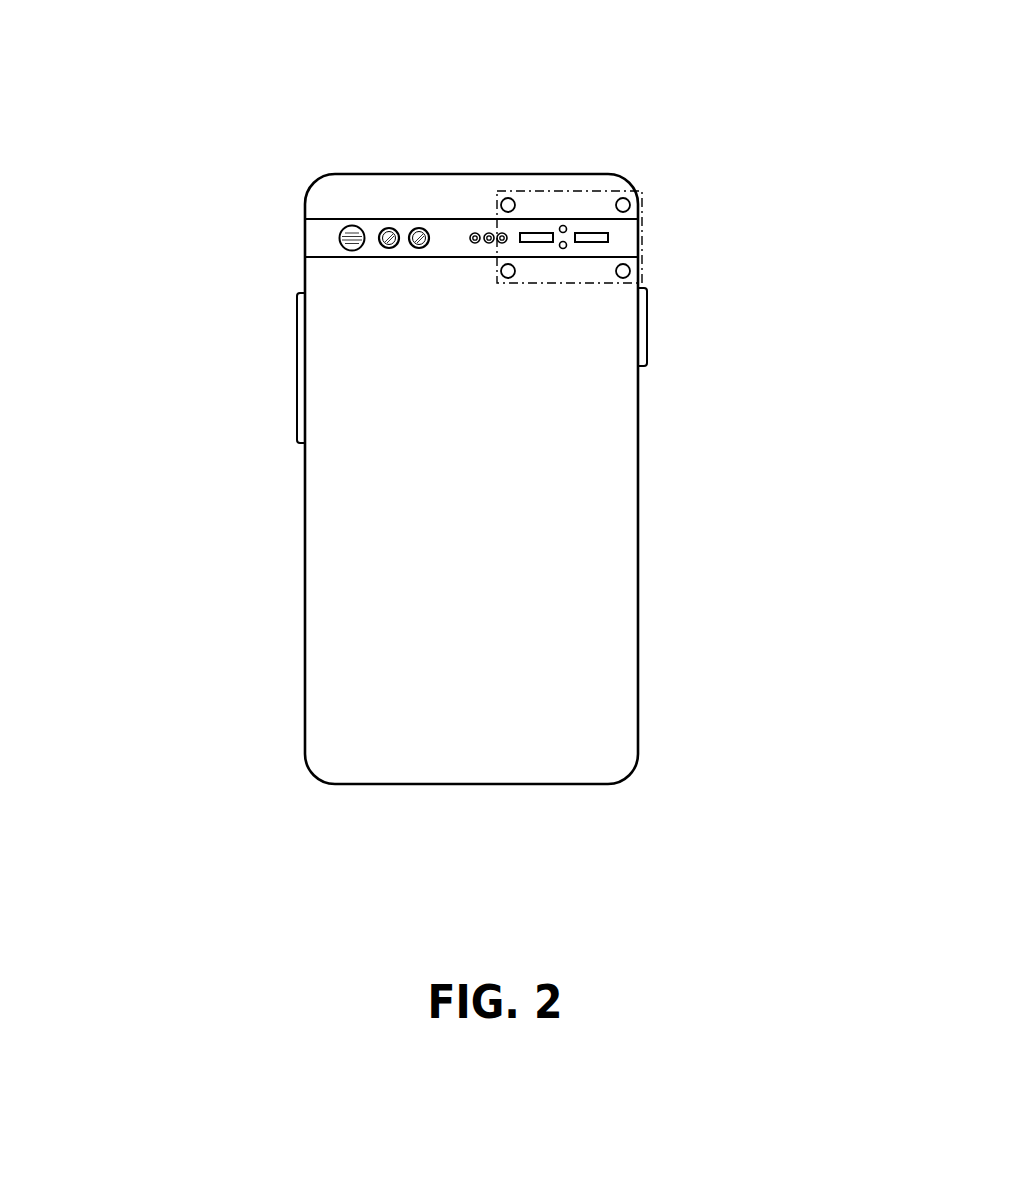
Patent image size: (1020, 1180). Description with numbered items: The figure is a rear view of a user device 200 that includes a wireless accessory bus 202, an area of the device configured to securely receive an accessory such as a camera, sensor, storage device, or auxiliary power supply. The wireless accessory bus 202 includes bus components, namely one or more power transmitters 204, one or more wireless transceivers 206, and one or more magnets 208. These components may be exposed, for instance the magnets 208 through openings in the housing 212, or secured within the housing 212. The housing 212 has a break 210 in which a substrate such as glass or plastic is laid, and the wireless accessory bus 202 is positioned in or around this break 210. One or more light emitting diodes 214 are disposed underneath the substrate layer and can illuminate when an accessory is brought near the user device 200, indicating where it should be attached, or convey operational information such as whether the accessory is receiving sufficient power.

The user device 200 is at (342, 31).
The wireless accessory bus 202 is at (594, 182).
The power transmitter 204 is at (554, 256).
The wireless transceiver 206 is at (619, 248).
The magnet 208 is at (508, 186).
The break 210 is at (299, 246).
The housing 212 is at (650, 464).
The light emitting diode 214 is at (459, 221).